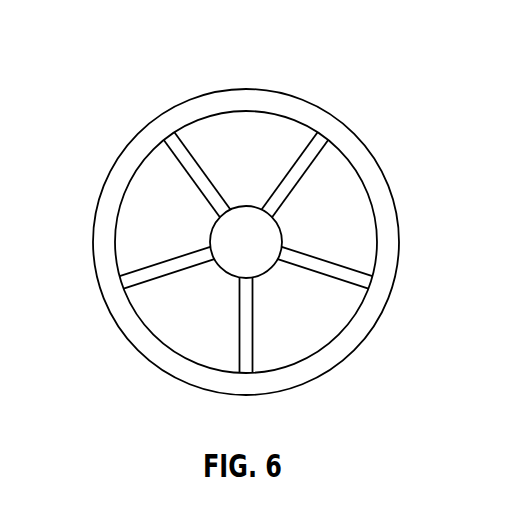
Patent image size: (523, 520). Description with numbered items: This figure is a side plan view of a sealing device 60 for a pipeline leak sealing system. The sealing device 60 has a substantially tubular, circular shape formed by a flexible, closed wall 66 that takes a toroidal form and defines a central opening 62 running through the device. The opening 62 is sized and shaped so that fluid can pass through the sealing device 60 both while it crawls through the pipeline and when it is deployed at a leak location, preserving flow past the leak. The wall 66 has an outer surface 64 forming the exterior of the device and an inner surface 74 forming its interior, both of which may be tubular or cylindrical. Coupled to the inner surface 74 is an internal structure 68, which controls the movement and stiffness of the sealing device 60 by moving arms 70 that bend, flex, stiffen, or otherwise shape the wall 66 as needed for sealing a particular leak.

The sealing device 60 is at (157, 48).
The opening 62 is at (178, 250).
The outer surface 64 is at (363, 143).
The wall 66 is at (390, 228).
The internal structure 68 is at (270, 273).
The arms 70 is at (239, 312).
The inner surface 74 is at (362, 190).